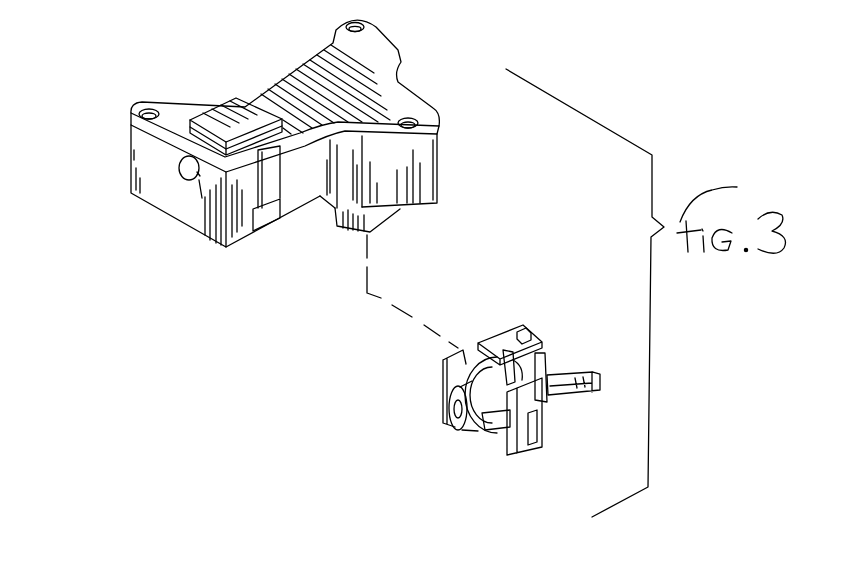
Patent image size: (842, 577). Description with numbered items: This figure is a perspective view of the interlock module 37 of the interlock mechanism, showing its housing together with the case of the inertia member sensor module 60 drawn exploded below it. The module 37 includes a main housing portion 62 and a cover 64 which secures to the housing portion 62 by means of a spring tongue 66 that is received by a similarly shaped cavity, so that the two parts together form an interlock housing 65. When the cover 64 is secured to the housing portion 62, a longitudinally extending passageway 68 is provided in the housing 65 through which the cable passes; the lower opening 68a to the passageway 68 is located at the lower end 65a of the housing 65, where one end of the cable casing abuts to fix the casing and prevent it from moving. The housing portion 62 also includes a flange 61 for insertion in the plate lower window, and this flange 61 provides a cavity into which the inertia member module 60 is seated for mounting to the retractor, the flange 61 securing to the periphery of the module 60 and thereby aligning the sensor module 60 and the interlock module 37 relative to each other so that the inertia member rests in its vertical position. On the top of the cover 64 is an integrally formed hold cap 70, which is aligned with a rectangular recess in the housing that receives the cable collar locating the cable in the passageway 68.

The module 37 is at (424, 48).
The inertia member sensor module 60 is at (488, 452).
The flange 61 is at (378, 230).
The main housing portion 62 is at (440, 165).
The cover 64 is at (407, 80).
The interlock housing 65 is at (201, 270).
The lower end of the housing 65a is at (130, 192).
The spring tongue 66 is at (262, 228).
The passageway 68 is at (193, 173).
The lower opening 68a is at (197, 172).
The hold cap 70 is at (227, 100).